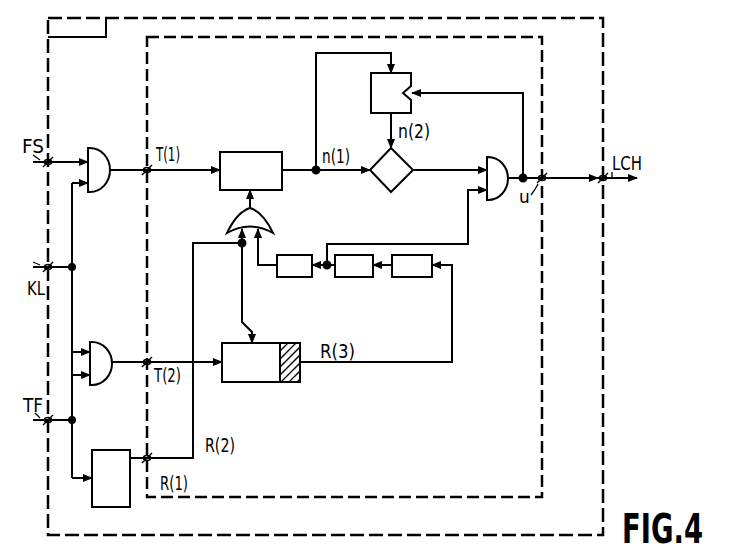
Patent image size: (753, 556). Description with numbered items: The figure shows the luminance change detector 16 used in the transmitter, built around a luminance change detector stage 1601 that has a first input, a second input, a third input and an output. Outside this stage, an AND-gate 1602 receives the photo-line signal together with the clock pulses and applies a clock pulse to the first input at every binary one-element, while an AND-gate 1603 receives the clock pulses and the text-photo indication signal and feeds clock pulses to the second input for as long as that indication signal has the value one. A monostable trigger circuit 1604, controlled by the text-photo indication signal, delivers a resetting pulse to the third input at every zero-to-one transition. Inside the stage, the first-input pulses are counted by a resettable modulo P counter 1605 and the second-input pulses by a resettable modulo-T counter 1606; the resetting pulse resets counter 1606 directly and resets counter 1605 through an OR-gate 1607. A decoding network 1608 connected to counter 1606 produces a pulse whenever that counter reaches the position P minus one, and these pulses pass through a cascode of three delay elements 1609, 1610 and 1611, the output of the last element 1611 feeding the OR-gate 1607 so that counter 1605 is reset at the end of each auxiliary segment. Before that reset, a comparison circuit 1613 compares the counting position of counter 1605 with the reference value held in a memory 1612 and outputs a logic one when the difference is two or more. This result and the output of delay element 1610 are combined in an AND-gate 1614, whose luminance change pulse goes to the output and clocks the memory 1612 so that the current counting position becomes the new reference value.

The luminance change detector 16 is at (325, 276).
The luminance change detector stage 1601 is at (148, 62).
The AND-gate 1602 is at (117, 152).
The AND-gate 1603 is at (112, 378).
The monostable trigger circuit 1604 is at (118, 507).
The resettable modulo P counter 1605 is at (229, 152).
The resettable modulo-T counter 1606 is at (248, 382).
The OR-gate 1607 is at (236, 221).
The decoding network 1608 is at (292, 382).
The delay element 1609 is at (430, 277).
The delay element 1610 is at (371, 277).
The delay element 1611 is at (310, 277).
The memory 1612 is at (372, 100).
The comparison circuit 1613 is at (400, 184).
The AND-gate 1614 is at (500, 157).